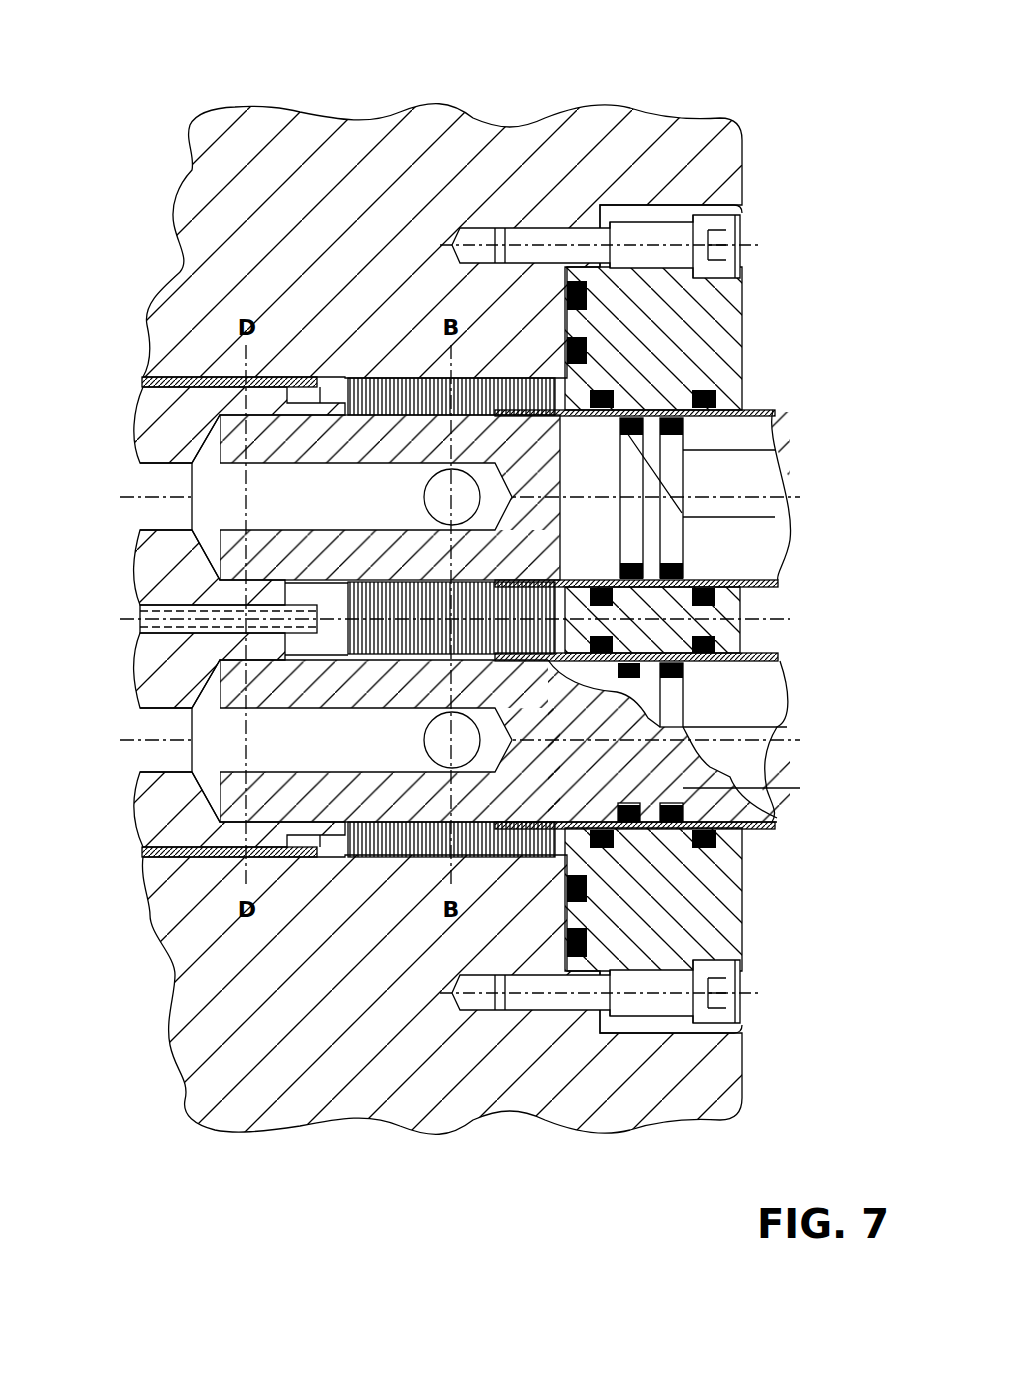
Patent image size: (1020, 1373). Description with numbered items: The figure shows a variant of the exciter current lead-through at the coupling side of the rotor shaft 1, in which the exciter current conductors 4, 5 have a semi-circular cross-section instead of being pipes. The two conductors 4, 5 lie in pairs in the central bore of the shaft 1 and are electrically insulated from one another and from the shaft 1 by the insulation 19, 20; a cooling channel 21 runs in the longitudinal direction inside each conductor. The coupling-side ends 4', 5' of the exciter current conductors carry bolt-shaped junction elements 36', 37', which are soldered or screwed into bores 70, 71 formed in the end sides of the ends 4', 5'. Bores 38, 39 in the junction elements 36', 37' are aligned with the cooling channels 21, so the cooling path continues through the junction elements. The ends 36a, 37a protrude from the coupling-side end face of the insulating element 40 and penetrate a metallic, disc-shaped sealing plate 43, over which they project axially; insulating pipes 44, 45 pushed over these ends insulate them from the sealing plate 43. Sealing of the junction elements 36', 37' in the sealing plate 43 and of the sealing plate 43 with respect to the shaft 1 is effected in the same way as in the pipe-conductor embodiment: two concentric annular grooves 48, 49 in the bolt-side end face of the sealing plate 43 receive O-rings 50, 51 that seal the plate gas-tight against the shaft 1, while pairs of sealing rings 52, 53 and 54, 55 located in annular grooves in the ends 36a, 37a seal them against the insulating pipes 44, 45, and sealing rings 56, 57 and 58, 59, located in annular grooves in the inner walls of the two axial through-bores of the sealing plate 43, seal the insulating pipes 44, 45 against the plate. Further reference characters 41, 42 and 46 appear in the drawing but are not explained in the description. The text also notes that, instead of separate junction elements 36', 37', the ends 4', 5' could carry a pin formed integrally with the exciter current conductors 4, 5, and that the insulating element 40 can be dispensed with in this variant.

The shaft 1 is at (336, 197).
The exciter current conductor 4 is at (195, 756).
The exciter current conductor 5 is at (195, 490).
The coupling-side end of exciter current conductor 4' is at (266, 1037).
The coupling-side end of exciter current conductor 5' is at (272, 201).
The insulation 19 is at (140, 628).
The insulation 20 is at (145, 380).
The cooling channel 21 is at (160, 477).
The junction element 36' is at (151, 907).
The junction element 37' is at (154, 346).
The end of connection element 36a is at (750, 693).
The end of connection element 37a is at (750, 543).
The bore 38 is at (357, 752).
The bore 39 is at (357, 508).
The insulating element 40 is at (487, 398).
The lower pin section 41 is at (386, 807).
The upper pin section 42 is at (390, 428).
The sealing plate 43 is at (668, 308).
The insulating pipe 44 is at (752, 833).
The insulating pipe 45 is at (755, 410).
The lip 46 is at (590, 1023).
The annular groove 48 is at (573, 957).
The annular groove 49 is at (650, 1033).
The sealing ring 50 is at (577, 280).
The sealing ring 51 is at (582, 332).
The sealing ring 52 is at (800, 790).
The sealing ring 53 is at (787, 728).
The sealing ring 54 is at (775, 450).
The sealing ring 55 is at (775, 517).
The sealing ring 56 is at (720, 883).
The sealing ring 57 is at (700, 913).
The sealing ring 58 is at (705, 385).
The sealing ring 59 is at (590, 342).
The bore 70 is at (205, 763).
The bore 71 is at (205, 517).